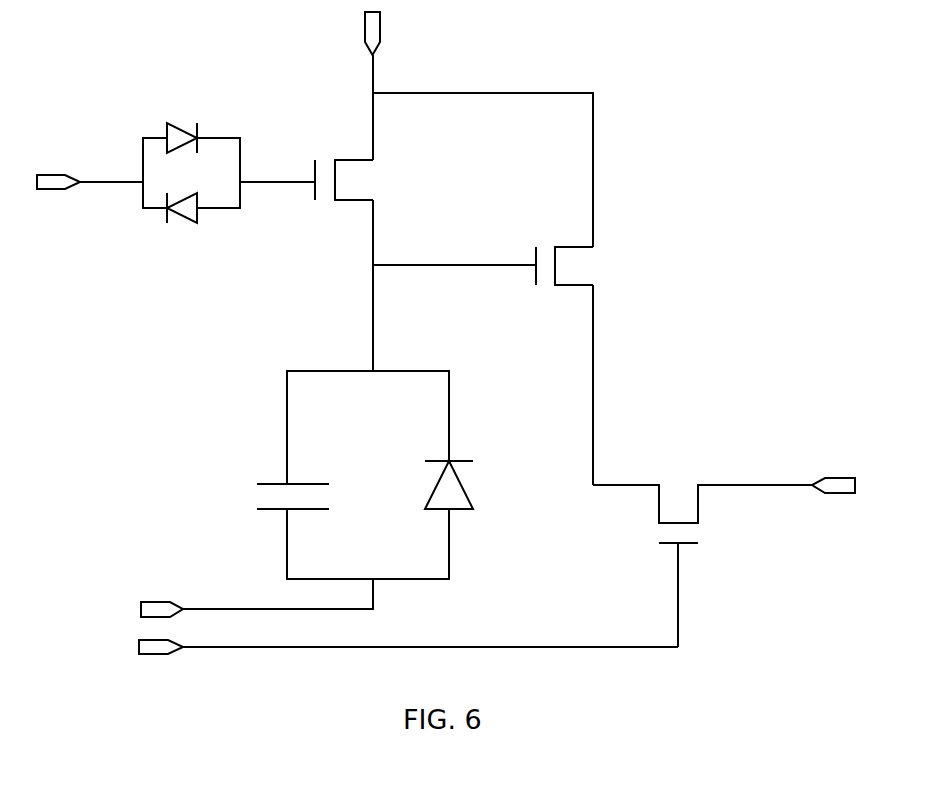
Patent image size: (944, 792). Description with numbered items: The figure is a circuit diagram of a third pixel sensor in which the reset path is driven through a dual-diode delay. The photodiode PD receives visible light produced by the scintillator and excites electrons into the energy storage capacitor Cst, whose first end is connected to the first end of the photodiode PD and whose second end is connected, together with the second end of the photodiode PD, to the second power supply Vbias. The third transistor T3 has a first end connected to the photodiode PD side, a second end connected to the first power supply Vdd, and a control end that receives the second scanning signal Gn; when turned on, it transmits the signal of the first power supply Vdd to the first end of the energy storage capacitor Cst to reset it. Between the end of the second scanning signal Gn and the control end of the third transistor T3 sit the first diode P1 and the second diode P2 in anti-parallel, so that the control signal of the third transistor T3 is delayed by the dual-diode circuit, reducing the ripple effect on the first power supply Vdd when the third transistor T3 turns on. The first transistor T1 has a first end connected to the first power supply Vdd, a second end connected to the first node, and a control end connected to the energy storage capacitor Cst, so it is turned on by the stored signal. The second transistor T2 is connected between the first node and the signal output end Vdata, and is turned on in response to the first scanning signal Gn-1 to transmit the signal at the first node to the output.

The first power supply Vdd is at (479, 129).
The second scanning signal Gn is at (90, 169).
The first diode P1 is at (191, 137).
The second diode P2 is at (191, 217).
The third transistor T3 is at (321, 265).
The first transistor T1 is at (496, 366).
The second transistor T2 is at (702, 551).
The data voltage terminal Vdata is at (837, 474).
The energy storage capacitor Cst is at (296, 475).
The photodiode PD is at (445, 475).
The second power supply Vbias is at (249, 595).
The first scanning signal Gn-1 is at (403, 661).